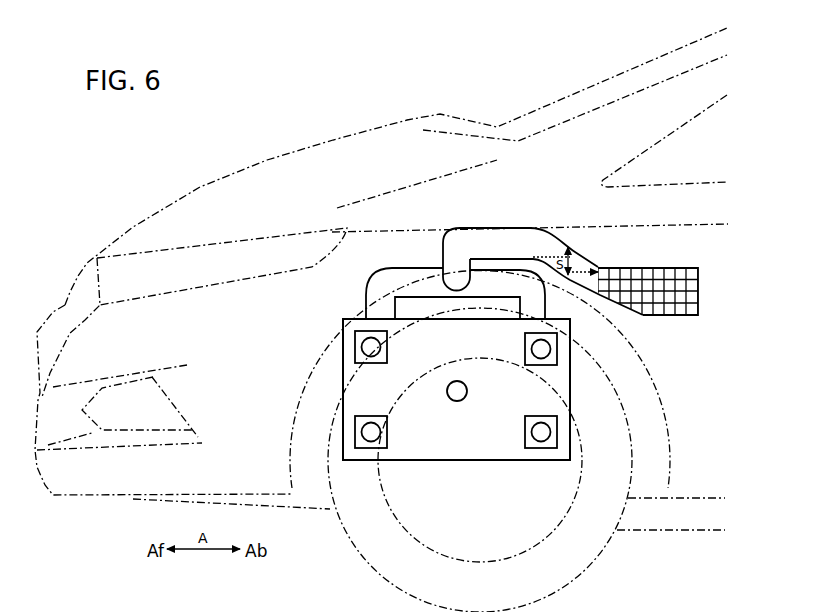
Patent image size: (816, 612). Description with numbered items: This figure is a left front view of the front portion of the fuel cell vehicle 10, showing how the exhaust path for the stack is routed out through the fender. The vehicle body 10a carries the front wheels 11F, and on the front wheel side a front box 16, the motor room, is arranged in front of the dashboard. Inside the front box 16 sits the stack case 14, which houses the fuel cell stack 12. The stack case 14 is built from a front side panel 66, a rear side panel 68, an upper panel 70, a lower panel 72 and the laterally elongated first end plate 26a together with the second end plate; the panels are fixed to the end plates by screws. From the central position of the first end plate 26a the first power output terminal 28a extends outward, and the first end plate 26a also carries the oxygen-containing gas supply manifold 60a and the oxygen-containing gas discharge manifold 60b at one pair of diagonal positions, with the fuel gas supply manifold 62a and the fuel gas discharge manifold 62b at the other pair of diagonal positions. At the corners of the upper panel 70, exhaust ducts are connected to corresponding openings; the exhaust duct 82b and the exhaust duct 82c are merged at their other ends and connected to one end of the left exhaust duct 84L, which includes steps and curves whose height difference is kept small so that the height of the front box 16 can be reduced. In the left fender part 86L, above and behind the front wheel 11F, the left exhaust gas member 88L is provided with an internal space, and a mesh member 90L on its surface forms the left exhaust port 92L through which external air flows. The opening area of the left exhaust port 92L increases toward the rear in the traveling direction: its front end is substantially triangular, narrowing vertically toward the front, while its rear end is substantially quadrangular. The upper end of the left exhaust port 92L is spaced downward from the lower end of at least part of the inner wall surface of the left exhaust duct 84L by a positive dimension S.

The fuel cell vehicle 10 is at (209, 126).
The vehicle body 10a is at (328, 143).
The front wheels 11F is at (603, 547).
The fuel cell stack 12 is at (416, 452).
The stack case 14 is at (367, 462).
The front box 16 is at (377, 155).
The first end plate 26a is at (447, 461).
The first power output terminal 28a is at (460, 394).
The oxygen-containing gas supply manifold 60a is at (545, 350).
The oxygen-containing gas discharge manifold 60b is at (368, 429).
The fuel gas supply manifold 62a is at (371, 346).
The fuel gas discharge manifold 62b is at (540, 435).
The front side panel 66 is at (343, 372).
The rear side panel 68 is at (571, 389).
The upper panel 70 is at (409, 315).
The lower panel 72 is at (508, 462).
The exhaust duct 82b is at (507, 286).
The exhaust duct 82c is at (372, 287).
The left exhaust duct 84L is at (553, 247).
The left fender part 86L is at (427, 247).
The left exhaust gas member 88L is at (700, 289).
The mesh member 90L is at (659, 316).
The left exhaust port 92L is at (690, 316).